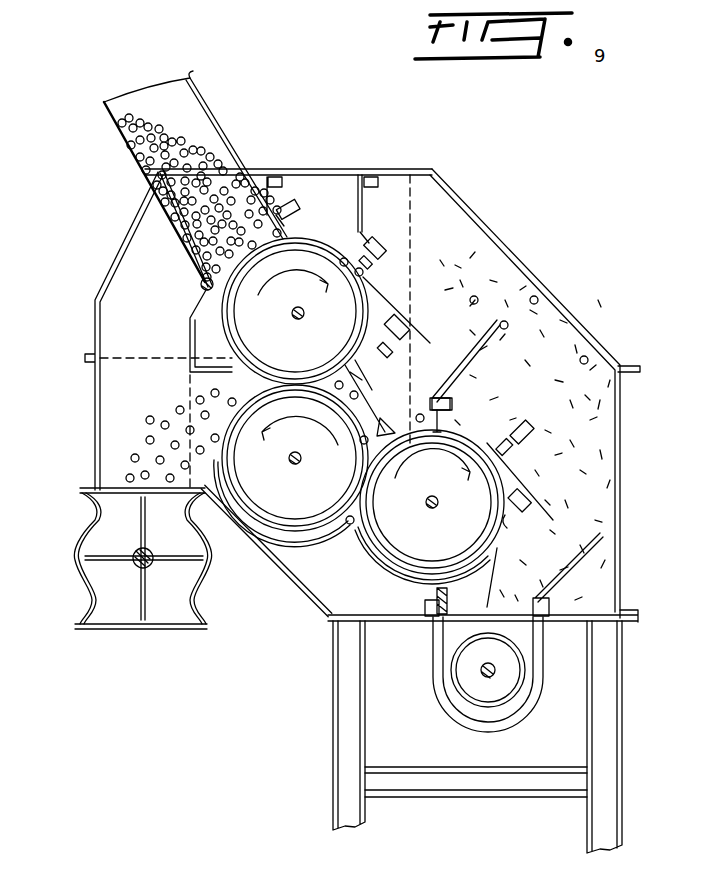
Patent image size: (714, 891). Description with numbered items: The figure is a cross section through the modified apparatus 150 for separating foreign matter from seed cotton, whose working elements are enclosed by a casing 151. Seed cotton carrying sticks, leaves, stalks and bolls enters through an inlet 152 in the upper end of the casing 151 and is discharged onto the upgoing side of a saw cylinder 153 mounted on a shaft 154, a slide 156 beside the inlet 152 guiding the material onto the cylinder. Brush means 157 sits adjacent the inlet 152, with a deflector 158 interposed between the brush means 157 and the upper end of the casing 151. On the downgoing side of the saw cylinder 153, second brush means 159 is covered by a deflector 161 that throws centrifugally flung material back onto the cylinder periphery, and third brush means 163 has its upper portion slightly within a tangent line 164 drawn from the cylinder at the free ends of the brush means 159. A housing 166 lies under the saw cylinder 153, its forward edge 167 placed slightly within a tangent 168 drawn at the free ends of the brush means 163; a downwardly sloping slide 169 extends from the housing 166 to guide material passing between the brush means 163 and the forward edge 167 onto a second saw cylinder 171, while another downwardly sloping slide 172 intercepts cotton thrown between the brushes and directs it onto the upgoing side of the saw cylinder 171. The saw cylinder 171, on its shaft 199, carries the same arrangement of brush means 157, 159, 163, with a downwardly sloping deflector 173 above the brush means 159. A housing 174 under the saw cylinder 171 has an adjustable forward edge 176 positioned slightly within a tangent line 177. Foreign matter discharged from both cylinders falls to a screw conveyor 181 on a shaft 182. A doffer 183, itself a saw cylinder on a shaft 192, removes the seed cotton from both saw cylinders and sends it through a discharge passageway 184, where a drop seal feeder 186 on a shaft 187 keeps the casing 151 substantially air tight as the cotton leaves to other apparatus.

The modified apparatus 150 is at (362, 168).
The casing 151 is at (95, 323).
The inlet 152 is at (248, 158).
The saw cylinder 153 is at (272, 323).
The shaft 154 is at (301, 320).
The slide 156 is at (190, 244).
The brush means 157 is at (304, 215).
The deflector 158 is at (280, 194).
The second brush means 159 is at (371, 264).
The deflector 161 is at (366, 212).
The third brush means 163 is at (460, 451).
The tangent line 164 is at (410, 330).
The housing 166 is at (318, 418).
The forward edge 167 is at (362, 376).
The tangent 168 is at (357, 355).
The downwardly sloping slide 169 is at (383, 420).
The second saw cylinder 171 is at (445, 489).
The downwardly sloping slide 172 is at (466, 353).
The downwardly sloping deflector 173 is at (564, 443).
The housing 174 is at (410, 592).
The forward edge 176 is at (474, 580).
The tangent line 177 is at (535, 586).
The screw conveyor 181 is at (465, 685).
The shaft 182 is at (505, 652).
The doffer 183 is at (312, 499).
The discharge passageway 184 is at (92, 576).
The drop seal feeder 186 is at (140, 527).
The shaft 187 is at (136, 567).
The shaft 192 is at (288, 460).
The shaft 199 is at (432, 508).